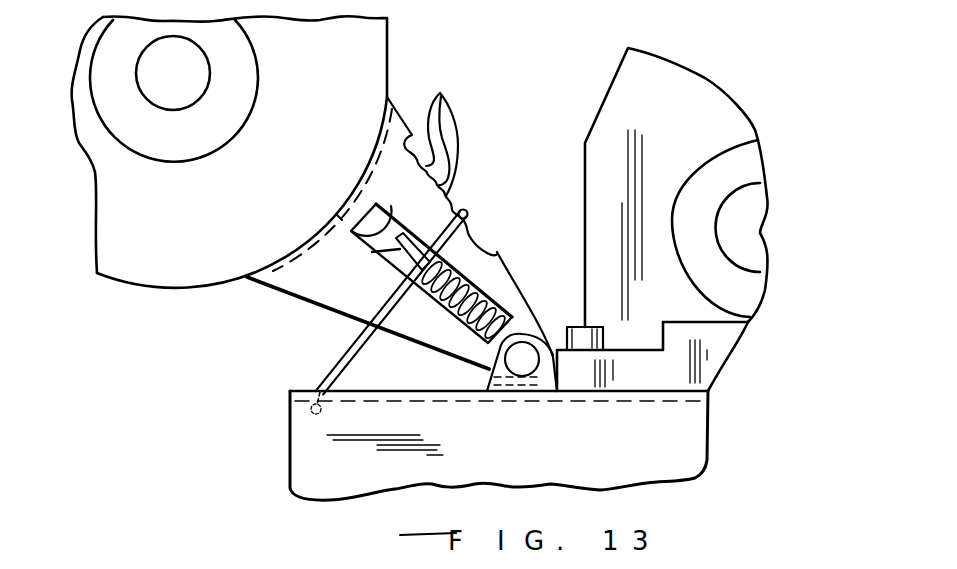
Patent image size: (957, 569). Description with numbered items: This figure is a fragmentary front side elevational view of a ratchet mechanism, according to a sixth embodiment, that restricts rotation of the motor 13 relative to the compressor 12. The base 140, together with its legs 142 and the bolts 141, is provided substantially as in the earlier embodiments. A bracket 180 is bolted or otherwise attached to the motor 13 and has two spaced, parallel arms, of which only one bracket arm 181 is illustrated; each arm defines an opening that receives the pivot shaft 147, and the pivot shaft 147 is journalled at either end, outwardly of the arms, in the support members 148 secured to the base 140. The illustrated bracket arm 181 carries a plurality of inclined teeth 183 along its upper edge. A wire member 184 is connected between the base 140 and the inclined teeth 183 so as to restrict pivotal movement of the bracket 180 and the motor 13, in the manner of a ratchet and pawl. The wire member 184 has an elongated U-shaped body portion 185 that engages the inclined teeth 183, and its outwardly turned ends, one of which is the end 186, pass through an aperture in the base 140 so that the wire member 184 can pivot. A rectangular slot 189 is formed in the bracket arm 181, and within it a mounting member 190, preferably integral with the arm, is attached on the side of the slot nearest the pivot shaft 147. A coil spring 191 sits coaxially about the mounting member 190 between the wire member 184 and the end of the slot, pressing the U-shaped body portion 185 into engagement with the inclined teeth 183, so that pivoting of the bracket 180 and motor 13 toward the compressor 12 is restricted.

The compressor 12 is at (713, 107).
The motor 13 is at (135, 252).
The base 140 is at (413, 391).
The bolts 141 is at (578, 334).
The legs 142 is at (667, 431).
The pivot shaft 147 is at (524, 361).
The support members 148 is at (523, 389).
The bracket 180 is at (292, 309).
The bracket arm 181 is at (340, 287).
The inclined teeth 183 is at (449, 88).
The wire member 184 is at (392, 312).
The U-shaped body portion 185 is at (466, 216).
The end of wire member 186 is at (311, 414).
The rectangular slot 189 is at (340, 217).
The mounting member 190 is at (372, 252).
The coil spring 191 is at (497, 253).